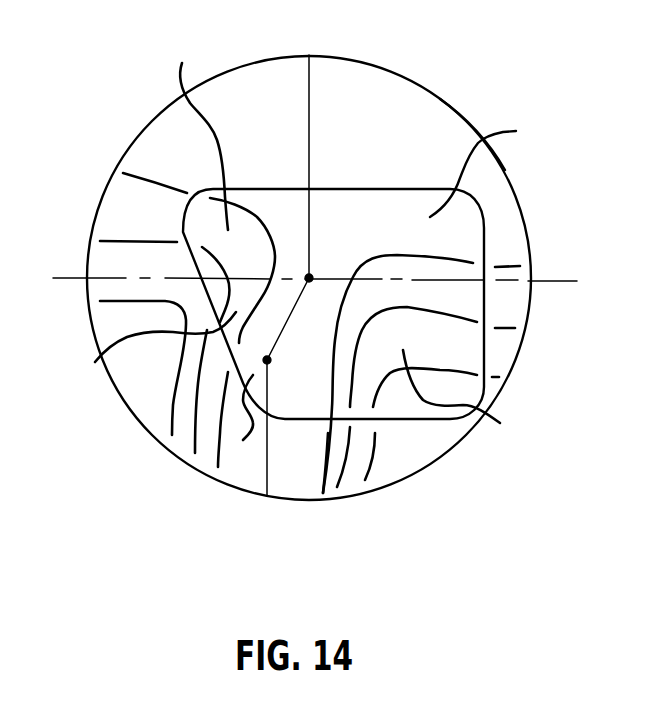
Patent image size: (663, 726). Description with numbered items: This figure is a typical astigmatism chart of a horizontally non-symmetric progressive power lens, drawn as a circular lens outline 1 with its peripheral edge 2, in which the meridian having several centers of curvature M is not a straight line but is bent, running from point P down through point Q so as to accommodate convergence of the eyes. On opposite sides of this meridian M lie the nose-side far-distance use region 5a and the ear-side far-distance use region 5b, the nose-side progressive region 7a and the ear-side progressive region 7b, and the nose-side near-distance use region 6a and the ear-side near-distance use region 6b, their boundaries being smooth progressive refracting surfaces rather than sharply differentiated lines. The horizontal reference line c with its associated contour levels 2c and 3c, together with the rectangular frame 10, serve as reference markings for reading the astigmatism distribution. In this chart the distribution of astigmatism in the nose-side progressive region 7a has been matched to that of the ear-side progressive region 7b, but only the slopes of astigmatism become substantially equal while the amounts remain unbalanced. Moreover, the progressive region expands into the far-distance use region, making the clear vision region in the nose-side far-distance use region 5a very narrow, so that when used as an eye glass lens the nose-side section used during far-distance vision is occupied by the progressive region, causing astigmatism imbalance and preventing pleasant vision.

The wafer 1 is at (453, 85).
The peripheral region 2 is at (456, 137).
The nose-side far-distance use region 5a is at (196, 129).
The ear-side far-distance use region 5b is at (489, 167).
The nose-side near-distance use region 6a is at (235, 337).
The ear-side near-distance use region 6b is at (293, 403).
The nose-side progressive region 7a is at (148, 344).
The ear-side progressive region 7b is at (468, 394).
The rectangular region 10 is at (477, 210).
The line 2c is at (307, 288).
The line 3c is at (300, 368).
The center axis c is at (315, 213).
The meridian having several centers of curvature M is at (289, 276).
The point P is at (312, 277).
The point Q is at (268, 361).